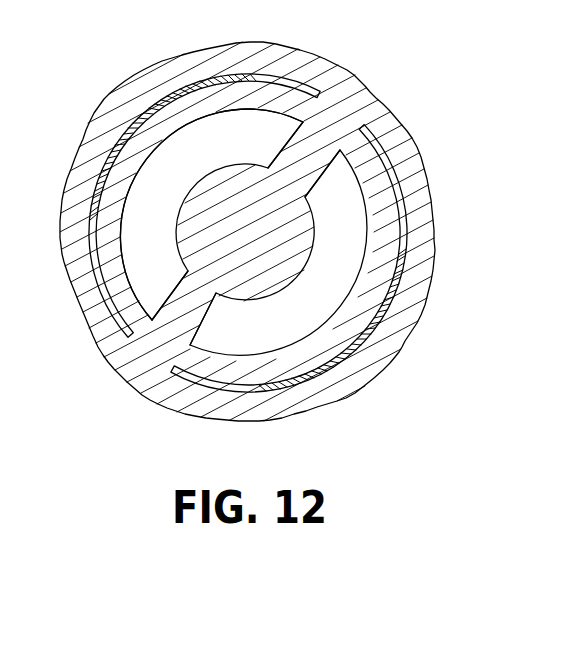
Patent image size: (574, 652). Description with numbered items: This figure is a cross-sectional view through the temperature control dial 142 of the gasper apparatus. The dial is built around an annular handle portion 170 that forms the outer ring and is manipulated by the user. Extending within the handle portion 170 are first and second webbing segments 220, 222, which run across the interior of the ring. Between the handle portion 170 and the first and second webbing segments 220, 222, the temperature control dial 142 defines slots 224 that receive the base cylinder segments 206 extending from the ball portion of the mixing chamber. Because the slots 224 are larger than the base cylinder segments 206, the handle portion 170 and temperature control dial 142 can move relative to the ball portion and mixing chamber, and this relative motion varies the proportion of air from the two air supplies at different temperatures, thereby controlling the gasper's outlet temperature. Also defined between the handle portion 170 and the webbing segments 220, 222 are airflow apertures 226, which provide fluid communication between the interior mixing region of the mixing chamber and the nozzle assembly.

The temperature control dial 142 is at (369, 93).
The annular handle portion 170 is at (178, 393).
The base cylinder segments 206 is at (164, 101).
The first webbing segment 220 is at (118, 227).
The second webbing segment 222 is at (216, 296).
The slots 224 is at (293, 83).
The airflow apertures 226 is at (208, 166).